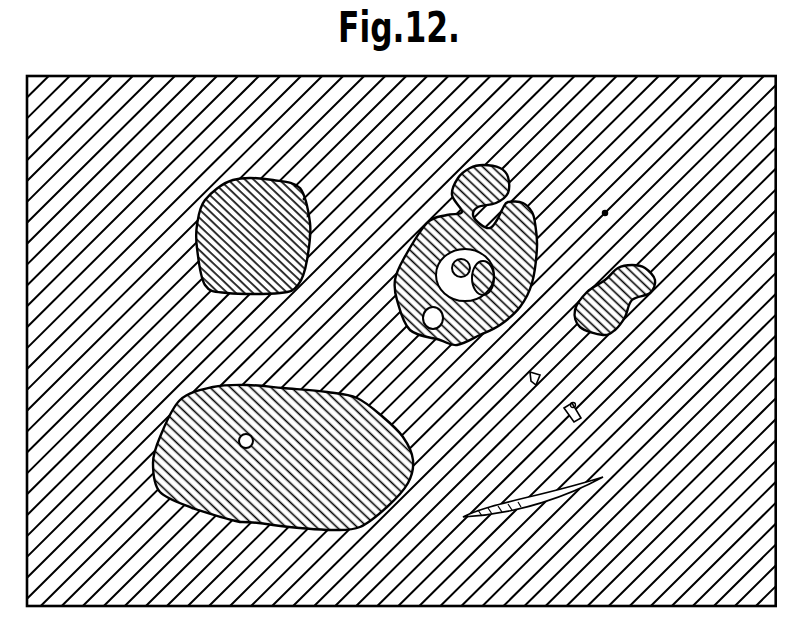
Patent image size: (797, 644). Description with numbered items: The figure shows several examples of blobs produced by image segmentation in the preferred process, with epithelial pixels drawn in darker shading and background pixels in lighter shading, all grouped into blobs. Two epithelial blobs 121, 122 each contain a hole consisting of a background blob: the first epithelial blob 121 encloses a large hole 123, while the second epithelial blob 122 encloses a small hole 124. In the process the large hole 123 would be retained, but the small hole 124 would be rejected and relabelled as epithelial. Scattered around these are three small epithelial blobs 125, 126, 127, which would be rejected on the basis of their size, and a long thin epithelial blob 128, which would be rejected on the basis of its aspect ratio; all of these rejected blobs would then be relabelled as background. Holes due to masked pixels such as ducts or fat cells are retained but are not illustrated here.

The epithelial blob 121 is at (437, 255).
The epithelial blob 122 is at (283, 450).
The large hole 123 is at (440, 275).
The small hole 124 is at (246, 449).
The small epithelial blob 125 is at (608, 214).
The small epithelial blob 126 is at (540, 375).
The small epithelial blob 127 is at (576, 405).
The long thin epithelial blob 128 is at (497, 518).